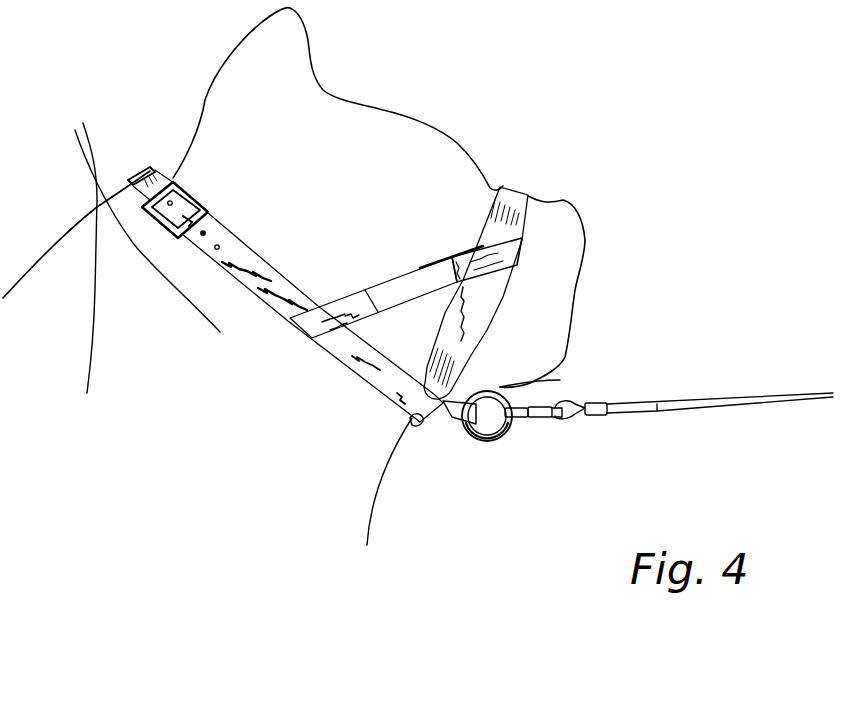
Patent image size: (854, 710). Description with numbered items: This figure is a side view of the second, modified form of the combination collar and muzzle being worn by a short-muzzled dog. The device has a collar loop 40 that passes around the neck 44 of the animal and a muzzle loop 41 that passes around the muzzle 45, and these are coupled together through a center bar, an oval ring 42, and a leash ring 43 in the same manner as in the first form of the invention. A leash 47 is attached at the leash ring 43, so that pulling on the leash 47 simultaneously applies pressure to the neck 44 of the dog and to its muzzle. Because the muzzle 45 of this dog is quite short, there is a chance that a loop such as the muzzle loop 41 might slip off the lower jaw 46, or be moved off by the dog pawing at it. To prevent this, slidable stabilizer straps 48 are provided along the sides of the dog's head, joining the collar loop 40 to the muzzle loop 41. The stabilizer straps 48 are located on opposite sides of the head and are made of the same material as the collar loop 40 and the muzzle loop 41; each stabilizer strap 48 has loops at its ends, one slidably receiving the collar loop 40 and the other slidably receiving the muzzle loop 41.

The collar loop 40 is at (225, 240).
The muzzle loop 41 is at (523, 200).
The oval ring 42 is at (415, 423).
The leash ring 43 is at (505, 432).
The neck 44 is at (294, 276).
The muzzle 45 is at (543, 268).
The lower jaw 46 is at (537, 378).
The leash 47 is at (710, 395).
The stabilizer straps 48 is at (420, 288).